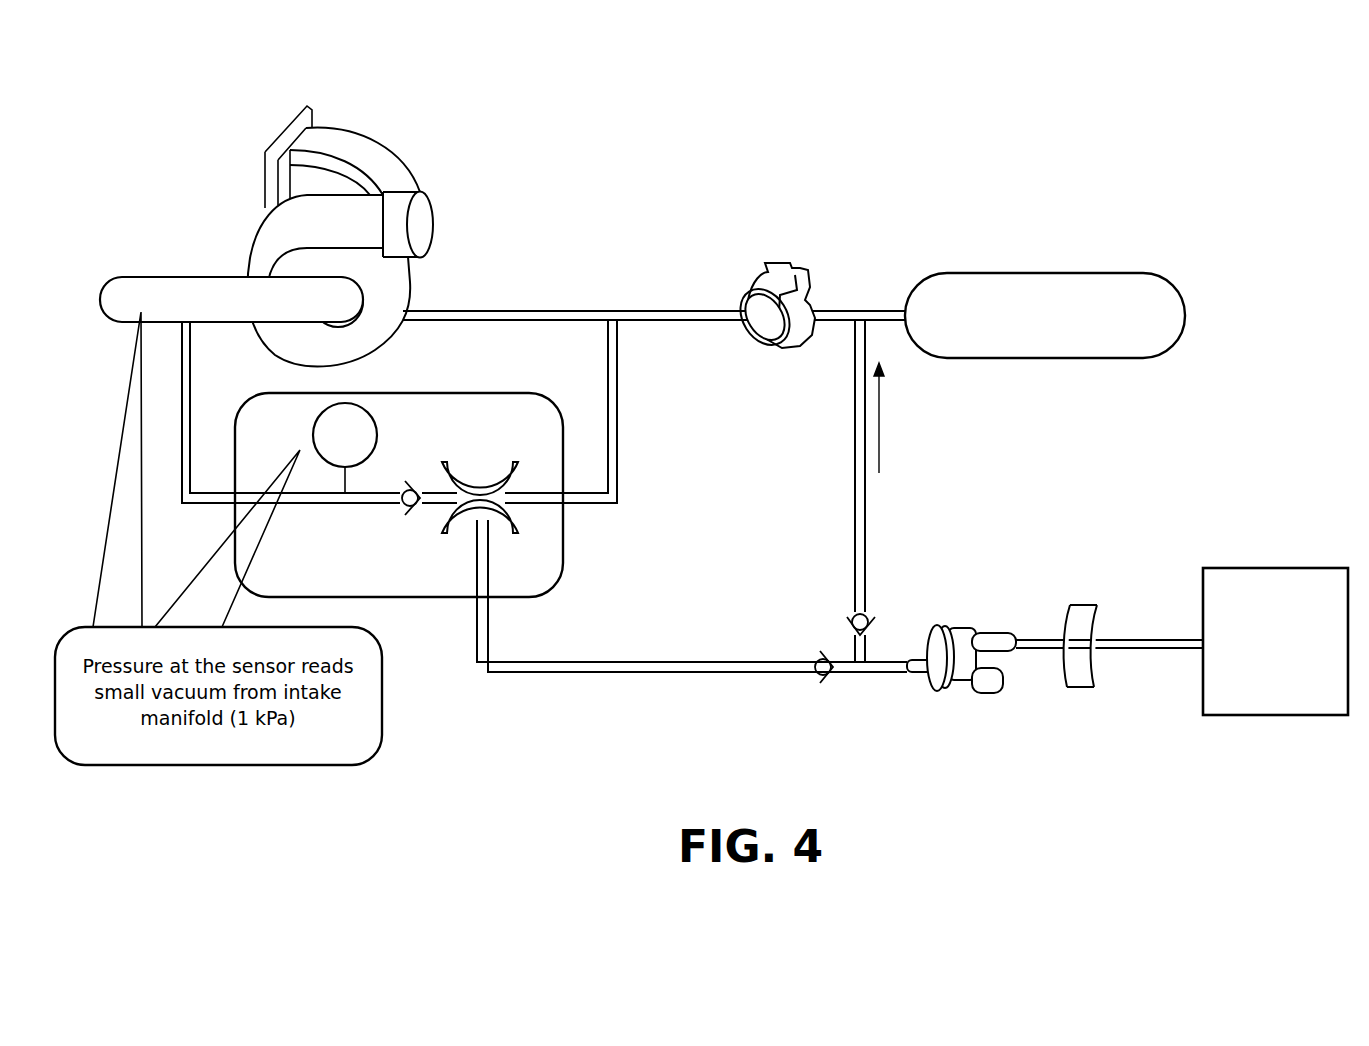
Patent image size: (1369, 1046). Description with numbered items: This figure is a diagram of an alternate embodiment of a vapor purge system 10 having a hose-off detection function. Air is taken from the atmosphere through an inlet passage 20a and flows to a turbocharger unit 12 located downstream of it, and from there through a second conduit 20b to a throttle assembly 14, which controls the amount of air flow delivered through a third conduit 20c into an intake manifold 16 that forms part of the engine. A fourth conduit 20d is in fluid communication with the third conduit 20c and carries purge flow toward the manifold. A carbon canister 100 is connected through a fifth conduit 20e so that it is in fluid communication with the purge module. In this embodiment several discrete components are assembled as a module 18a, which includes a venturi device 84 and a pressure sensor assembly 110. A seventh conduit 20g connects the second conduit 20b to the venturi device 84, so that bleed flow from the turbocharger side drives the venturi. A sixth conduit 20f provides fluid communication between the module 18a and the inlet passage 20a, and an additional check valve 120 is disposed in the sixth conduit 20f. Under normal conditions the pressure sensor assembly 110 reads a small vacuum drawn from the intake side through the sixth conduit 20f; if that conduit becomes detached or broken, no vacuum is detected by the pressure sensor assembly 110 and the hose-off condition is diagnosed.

The vapor purge system 10 is at (1214, 152).
The turbocharger unit 12 is at (434, 222).
The throttle assembly 14 is at (748, 292).
The intake manifold 16 is at (1083, 273).
The module 18a is at (452, 597).
The inlet passage 20a is at (165, 277).
The second conduit 20b is at (585, 311).
The third conduit 20c is at (840, 311).
The fourth conduit 20d is at (875, 330).
The fifth conduit 20e is at (1170, 648).
The sixth conduit 20f is at (182, 425).
The seventh conduit 20g is at (618, 381).
The venturi device 84 is at (530, 456).
The carbon canister 100 is at (1305, 568).
The pressure sensor assembly 110 is at (378, 432).
The check valve 120 is at (410, 504).